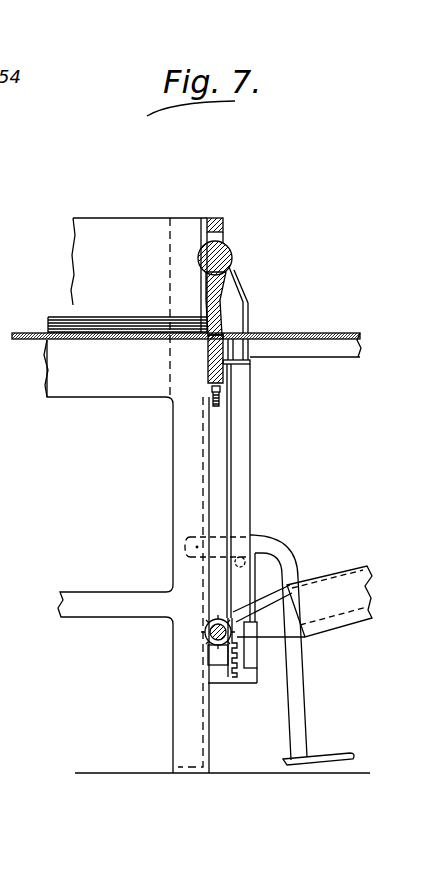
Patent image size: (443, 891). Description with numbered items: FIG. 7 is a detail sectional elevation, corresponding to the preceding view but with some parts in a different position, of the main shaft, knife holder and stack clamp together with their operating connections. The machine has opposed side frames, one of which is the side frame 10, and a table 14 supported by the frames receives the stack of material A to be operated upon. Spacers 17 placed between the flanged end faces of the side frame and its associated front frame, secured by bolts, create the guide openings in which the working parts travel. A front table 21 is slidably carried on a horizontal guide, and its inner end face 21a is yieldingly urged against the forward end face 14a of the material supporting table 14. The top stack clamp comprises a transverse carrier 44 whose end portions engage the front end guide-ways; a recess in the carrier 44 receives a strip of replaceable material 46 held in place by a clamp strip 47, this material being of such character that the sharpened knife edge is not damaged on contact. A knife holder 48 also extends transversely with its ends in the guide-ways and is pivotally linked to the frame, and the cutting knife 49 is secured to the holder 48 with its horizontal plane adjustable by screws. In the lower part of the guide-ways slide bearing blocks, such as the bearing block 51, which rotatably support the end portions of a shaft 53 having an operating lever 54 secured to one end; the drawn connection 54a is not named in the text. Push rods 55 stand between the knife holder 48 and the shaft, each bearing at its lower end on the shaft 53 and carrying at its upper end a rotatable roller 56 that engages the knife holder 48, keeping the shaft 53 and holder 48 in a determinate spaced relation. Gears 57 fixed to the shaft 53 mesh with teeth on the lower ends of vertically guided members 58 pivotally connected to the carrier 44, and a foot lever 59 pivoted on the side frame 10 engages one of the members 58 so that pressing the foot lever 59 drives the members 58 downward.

The side frame 10 is at (190, 779).
The table 14 is at (94, 346).
The forward end face 14a is at (207, 273).
The spacer 17 is at (213, 222).
The front table 21 is at (343, 348).
The inner end face 21a is at (222, 334).
The carrier 44 is at (228, 254).
The strip of replaceable material 46 is at (200, 307).
The clamp strip 47 is at (220, 312).
The knife holder 48 is at (237, 367).
The cutting knife 49 is at (212, 345).
The bearing block 51 is at (220, 686).
The shaft 53 is at (207, 643).
The operating lever 54 is at (353, 598).
The pedal link 54a is at (342, 580).
The push rod 55 is at (228, 468).
The roller 56 is at (222, 398).
The gear 57 is at (205, 630).
The vertically guided member 58 is at (250, 512).
The foot lever 59 is at (296, 701).
The material A is at (62, 322).